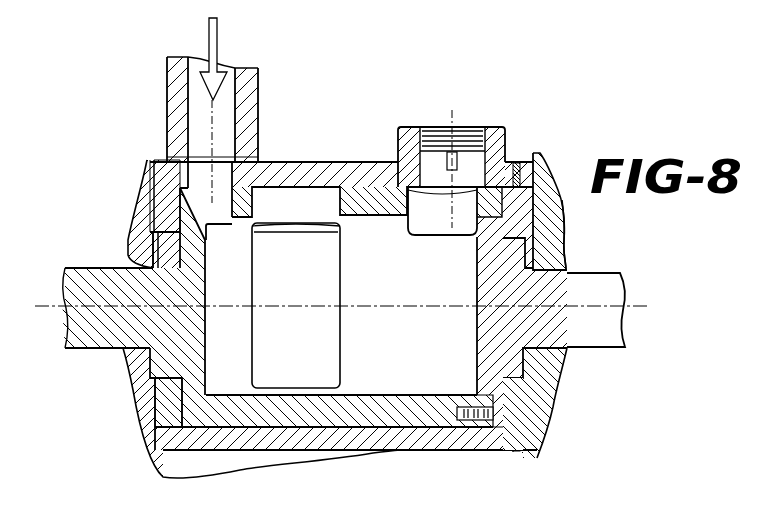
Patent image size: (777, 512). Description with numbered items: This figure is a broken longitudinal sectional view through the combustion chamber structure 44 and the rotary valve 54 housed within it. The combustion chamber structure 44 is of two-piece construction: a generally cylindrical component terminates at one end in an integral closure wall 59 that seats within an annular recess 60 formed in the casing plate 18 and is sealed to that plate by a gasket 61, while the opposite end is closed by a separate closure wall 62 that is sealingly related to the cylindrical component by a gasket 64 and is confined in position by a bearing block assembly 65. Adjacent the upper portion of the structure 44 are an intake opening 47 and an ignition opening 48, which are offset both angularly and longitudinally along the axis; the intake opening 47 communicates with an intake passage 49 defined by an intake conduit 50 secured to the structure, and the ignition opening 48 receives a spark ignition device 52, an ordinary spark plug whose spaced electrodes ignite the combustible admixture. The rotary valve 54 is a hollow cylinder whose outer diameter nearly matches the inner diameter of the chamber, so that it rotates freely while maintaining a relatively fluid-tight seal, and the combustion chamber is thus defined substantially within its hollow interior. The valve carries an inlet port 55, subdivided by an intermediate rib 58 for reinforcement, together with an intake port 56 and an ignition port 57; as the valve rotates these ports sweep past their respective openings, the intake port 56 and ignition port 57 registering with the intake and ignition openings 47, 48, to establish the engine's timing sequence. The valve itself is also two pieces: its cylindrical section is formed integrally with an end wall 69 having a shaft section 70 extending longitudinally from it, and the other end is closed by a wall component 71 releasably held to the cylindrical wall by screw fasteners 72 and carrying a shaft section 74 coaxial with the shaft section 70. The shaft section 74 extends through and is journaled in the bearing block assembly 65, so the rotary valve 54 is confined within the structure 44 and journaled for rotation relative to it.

The casing plate 18 is at (137, 413).
The combustion chamber structure 44 is at (293, 164).
The intake opening 47 is at (228, 162).
The ignition opening 48 is at (423, 162).
The intake passage 49 is at (193, 108).
The intake conduit 50 is at (170, 70).
The spark ignition device 52 is at (463, 127).
The rotary valve 54 is at (418, 398).
The inlet port 55 is at (332, 347).
The intake port 56 is at (222, 218).
The ignition port 57 is at (448, 227).
The intermediate rib 58 is at (308, 225).
The integral closure wall 59 is at (163, 180).
The annular recess 60 is at (153, 205).
The gasket 61 is at (152, 387).
The closure wall 62 is at (523, 195).
The gasket 64 is at (517, 180).
The bearing block assembly 65 is at (558, 230).
The end wall 69 is at (163, 350).
The shaft section 70 is at (65, 275).
The wall component 71 is at (516, 373).
The screw fasteners 72 is at (470, 422).
The shaft section 74 is at (623, 273).